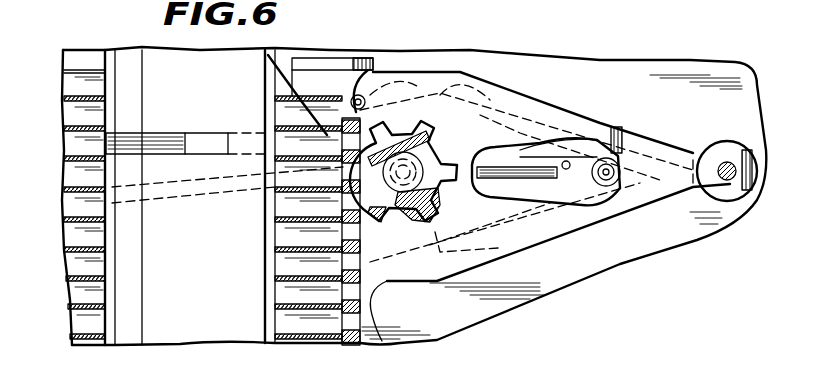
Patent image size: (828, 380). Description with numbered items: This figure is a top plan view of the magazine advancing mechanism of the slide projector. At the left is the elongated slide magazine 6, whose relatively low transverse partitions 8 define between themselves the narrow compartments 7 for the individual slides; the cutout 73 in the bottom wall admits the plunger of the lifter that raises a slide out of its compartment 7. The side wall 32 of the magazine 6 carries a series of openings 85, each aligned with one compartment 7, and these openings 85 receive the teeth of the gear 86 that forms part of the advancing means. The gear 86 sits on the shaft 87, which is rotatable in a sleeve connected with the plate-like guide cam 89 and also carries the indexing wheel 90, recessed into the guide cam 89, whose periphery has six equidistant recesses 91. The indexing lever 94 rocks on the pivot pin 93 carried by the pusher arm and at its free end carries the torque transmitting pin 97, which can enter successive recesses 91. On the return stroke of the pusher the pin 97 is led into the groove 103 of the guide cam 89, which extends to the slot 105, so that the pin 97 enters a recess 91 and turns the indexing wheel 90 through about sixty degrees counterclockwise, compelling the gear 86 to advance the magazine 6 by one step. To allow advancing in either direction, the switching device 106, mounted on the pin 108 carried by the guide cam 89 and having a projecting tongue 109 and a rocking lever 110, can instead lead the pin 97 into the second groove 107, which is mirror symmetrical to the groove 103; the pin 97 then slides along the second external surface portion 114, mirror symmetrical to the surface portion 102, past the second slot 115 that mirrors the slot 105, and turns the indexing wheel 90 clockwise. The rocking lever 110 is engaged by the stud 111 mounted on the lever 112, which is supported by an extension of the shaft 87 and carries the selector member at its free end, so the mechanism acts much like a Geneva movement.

The slide magazine 6 is at (68, 318).
The compartments 7 is at (72, 145).
The transverse partitions 8 is at (72, 277).
The side wall 32 is at (370, 313).
The cutout 73 is at (170, 133).
The openings 85 is at (343, 192).
The gear 86 is at (432, 206).
The shaft 87 is at (405, 212).
The guide cam 89 is at (504, 92).
The indexing wheel 90 is at (488, 168).
The recesses 91 is at (490, 178).
The pivot pin 93 is at (736, 172).
The indexing lever 94 is at (578, 135).
The torque transmitting pin 97 is at (352, 96).
The external surface portion 102 is at (617, 127).
The groove 103 is at (474, 100).
The slot 105 is at (372, 70).
The switching device 106 is at (637, 163).
The second groove 107 is at (500, 280).
The pin 108 is at (605, 212).
The projecting tongue 109 is at (652, 205).
The rocking lever 110 is at (569, 237).
The stud 111 is at (565, 170).
The lever 112 is at (170, 193).
The second external surface portion 114 is at (627, 190).
The second slot 115 is at (371, 290).